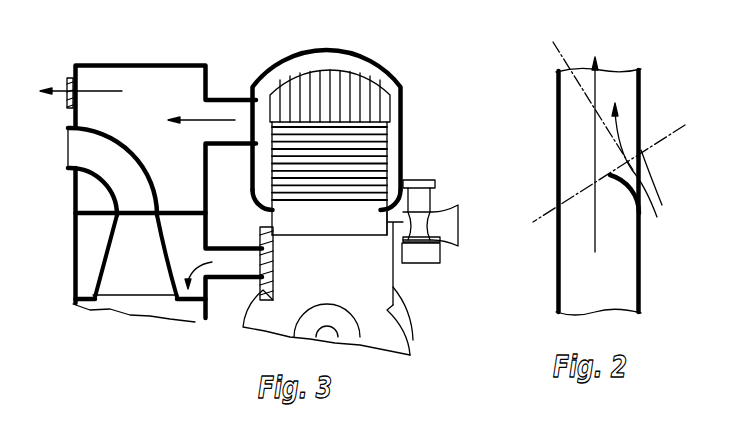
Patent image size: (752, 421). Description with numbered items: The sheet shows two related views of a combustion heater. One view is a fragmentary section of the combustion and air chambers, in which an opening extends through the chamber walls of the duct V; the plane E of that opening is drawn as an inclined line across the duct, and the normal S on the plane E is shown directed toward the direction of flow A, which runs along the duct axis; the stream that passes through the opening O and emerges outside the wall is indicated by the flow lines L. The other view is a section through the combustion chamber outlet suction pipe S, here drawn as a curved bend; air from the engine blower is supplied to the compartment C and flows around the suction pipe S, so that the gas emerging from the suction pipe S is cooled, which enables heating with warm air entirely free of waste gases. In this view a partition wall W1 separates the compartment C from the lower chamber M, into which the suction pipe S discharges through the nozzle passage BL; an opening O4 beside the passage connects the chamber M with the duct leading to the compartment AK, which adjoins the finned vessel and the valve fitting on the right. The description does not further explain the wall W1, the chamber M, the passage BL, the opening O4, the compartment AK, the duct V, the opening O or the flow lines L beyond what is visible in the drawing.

In FIG. 3, the compartment C is at (157, 70).
In FIG. 3, the combustion chamber outlet suction pipe S is at (112, 171).
In FIG. 2, the combustion chamber outlet suction pipe S is at (586, 93).
In FIG. 3, the partition wall W1 is at (88, 213).
In FIG. 3, the mixing chamber M is at (74, 233).
In FIG. 3, the blow-in nozzle BL is at (136, 256).
In FIG. 3, the opening O4 is at (190, 307).
In FIG. 3, the drive compartment AK is at (262, 257).
In FIG. 2, the pipe / duct V is at (565, 153).
In FIG. 2, the direction of flow A is at (594, 172).
In FIG. 2, the plane of the opening E is at (609, 159).
In FIG. 2, the opening O is at (643, 166).
In FIG. 2, the air stream L is at (662, 205).